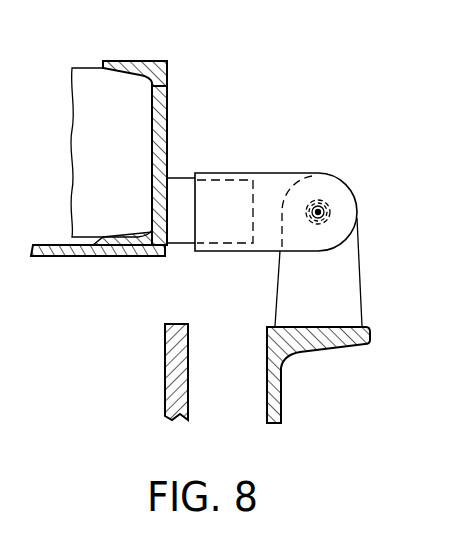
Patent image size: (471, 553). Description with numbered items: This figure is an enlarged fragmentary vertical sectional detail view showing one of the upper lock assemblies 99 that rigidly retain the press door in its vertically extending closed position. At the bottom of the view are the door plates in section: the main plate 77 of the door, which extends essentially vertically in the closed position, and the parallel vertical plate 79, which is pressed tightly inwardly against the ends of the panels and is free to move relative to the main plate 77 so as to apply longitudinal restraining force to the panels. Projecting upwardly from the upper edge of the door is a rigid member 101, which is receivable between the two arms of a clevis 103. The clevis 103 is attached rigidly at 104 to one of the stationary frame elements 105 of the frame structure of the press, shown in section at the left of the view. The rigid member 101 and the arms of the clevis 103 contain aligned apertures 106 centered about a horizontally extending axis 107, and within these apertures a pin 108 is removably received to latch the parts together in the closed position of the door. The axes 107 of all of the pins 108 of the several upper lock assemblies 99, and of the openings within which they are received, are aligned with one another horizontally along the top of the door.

The main plate 77 is at (282, 387).
The parallel vertical plate 79 is at (160, 363).
The upper lock assembly 99 is at (348, 145).
The rigid member 101 is at (350, 292).
The clevis 103 is at (250, 172).
The attachment of clevis to frame element 104 is at (167, 177).
The stationary frame element 105 is at (143, 62).
The aligned apertures 106 is at (332, 205).
The horizontally extending axis 107 is at (315, 222).
The pin 108 is at (305, 215).